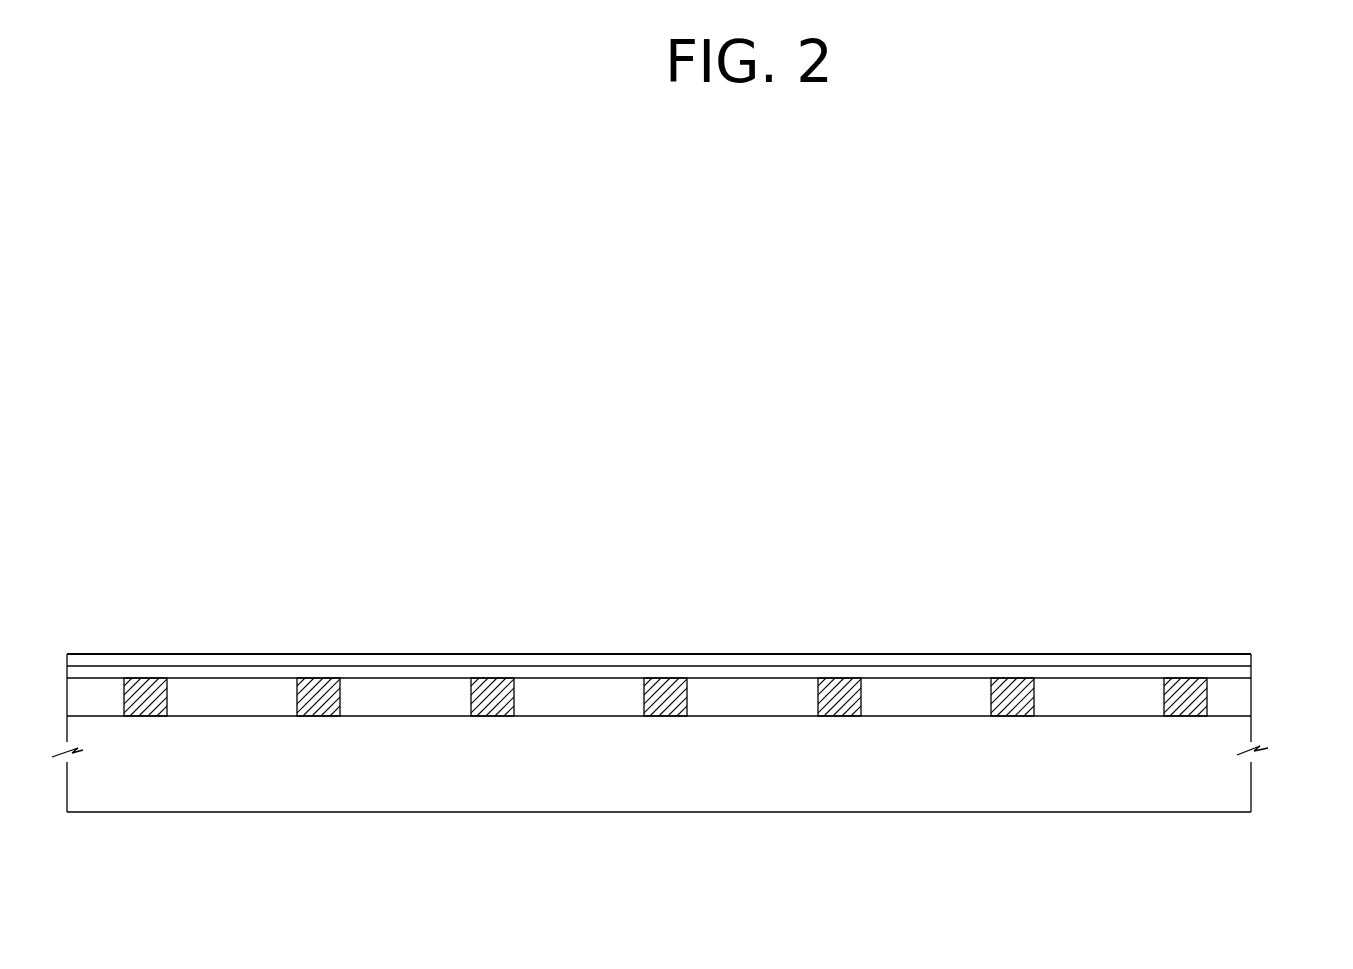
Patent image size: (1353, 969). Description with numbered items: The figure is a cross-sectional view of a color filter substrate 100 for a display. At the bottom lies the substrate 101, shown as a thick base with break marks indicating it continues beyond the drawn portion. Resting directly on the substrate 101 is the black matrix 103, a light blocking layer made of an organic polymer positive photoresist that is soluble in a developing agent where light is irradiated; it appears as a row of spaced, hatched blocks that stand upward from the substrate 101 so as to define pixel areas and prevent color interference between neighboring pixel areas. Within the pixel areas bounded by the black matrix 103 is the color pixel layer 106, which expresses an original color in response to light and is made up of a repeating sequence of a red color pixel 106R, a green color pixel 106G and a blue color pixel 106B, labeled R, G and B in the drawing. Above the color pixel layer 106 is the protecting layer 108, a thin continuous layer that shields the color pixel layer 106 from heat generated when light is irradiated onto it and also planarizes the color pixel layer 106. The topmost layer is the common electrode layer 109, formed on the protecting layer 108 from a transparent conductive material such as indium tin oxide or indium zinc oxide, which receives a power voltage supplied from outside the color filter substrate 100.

The color filter substrate 100 is at (815, 259).
The substrate 101 is at (1243, 778).
The black matrix 103 is at (1200, 695).
The color pixel layer 106 is at (548, 557).
The red color pixel 106R is at (188, 693).
The green color pixel 106G is at (355, 693).
The blue color pixel 106B is at (525, 693).
The protecting layer 108 is at (1243, 671).
The common electrode layer 109 is at (1243, 660).